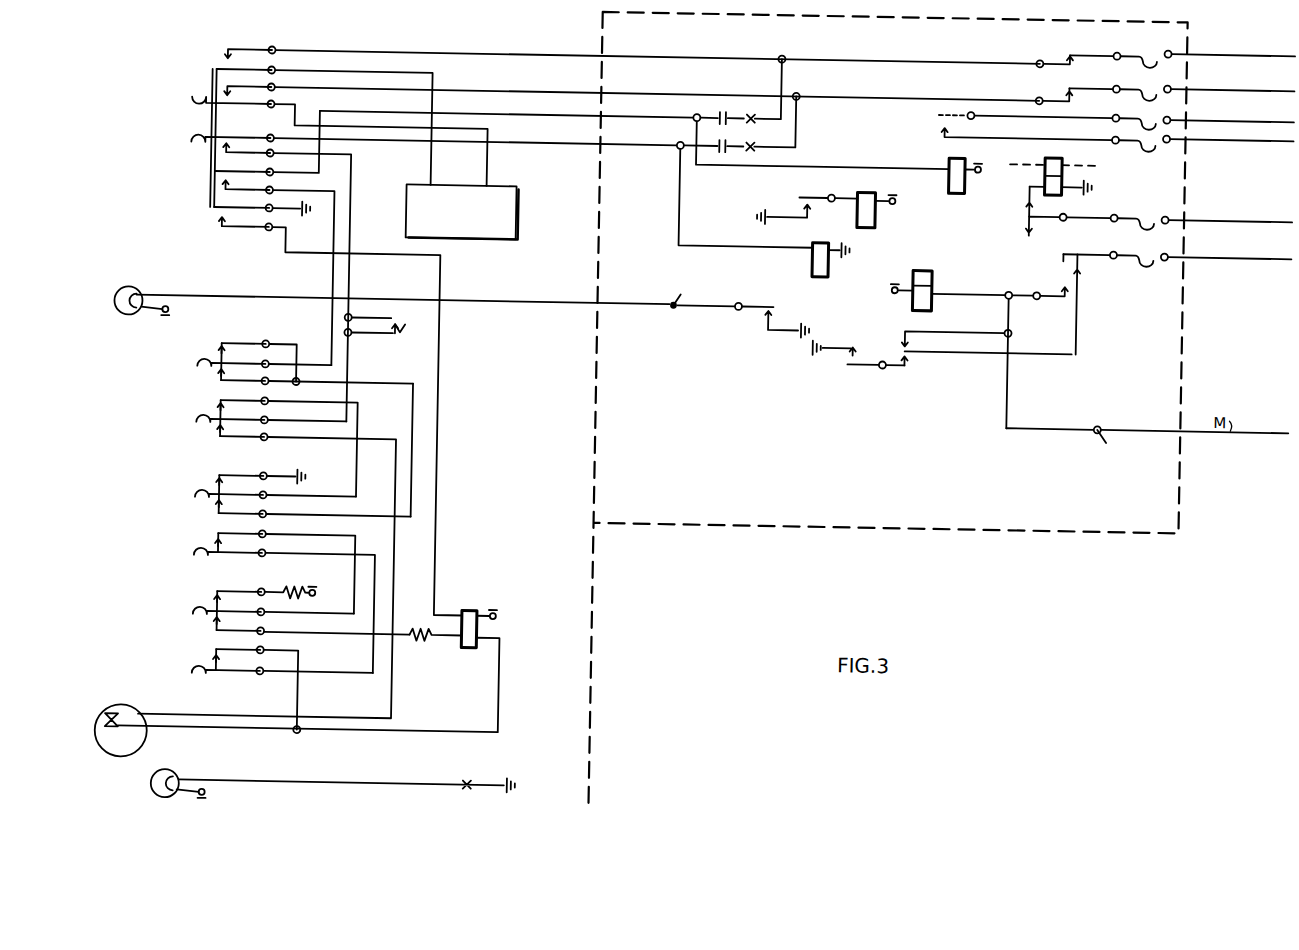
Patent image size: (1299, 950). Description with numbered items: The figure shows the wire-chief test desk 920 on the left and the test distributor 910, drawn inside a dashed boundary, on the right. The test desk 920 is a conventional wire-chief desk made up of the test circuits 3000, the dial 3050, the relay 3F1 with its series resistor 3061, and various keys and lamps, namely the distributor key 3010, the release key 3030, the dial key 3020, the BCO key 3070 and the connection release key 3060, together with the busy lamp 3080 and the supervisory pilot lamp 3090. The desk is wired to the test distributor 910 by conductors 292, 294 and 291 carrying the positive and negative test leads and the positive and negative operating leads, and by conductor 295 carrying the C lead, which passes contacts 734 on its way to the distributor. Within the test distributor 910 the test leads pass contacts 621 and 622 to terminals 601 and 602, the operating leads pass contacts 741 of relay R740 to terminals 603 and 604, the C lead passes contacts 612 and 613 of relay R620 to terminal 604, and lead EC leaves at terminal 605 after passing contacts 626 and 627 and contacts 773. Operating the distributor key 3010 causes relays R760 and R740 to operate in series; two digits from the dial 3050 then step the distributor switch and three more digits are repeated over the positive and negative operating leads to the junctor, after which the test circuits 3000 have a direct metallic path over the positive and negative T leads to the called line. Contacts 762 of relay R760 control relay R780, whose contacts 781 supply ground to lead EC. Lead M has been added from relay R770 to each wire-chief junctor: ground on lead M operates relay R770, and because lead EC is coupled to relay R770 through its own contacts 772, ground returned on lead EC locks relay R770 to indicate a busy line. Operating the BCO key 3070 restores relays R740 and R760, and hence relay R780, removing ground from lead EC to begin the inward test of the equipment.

The distributor key 3010 is at (207, 96).
The test circuits 3000 is at (462, 202).
The busy lamp 3080 is at (72, 309).
The release key 3030 is at (407, 374).
The dial key 3020 is at (214, 387).
The BCO key 3070 is at (202, 523).
The connection release key 3060 is at (202, 648).
The resistor 3061 is at (424, 648).
The relay 3F1 is at (494, 602).
The dial 3050 is at (117, 713).
The supervisory pilot lamp 3090 is at (150, 811).
The test desk 920 is at (520, 486).
The test distributor 910 is at (700, 506).
The conductor 292 is at (591, 132).
The conductor 294 is at (680, 74).
The conductor 291 is at (680, 96).
The conductor 295C 295 is at (651, 296).
The contacts 621 is at (1061, 48).
The contacts 622 is at (1061, 85).
The terminal 601 is at (1137, 34).
The terminal 602 is at (1137, 70).
The terminal 603 is at (1137, 98).
The terminal 604 is at (1136, 130).
The terminal 605 is at (1137, 237).
The contacts 741 is at (938, 115).
The relay R740 is at (955, 146).
The relay R620 is at (1045, 145).
The contacts 612 is at (1026, 200).
The contacts 613 is at (1026, 214).
The contacts 626 is at (1062, 281).
The contacts 627 is at (1090, 251).
The relay R770 is at (934, 268).
The relay R780 is at (852, 184).
The contacts 762 is at (798, 201).
The relay R760 is at (811, 266).
The contacts 734' 734 is at (769, 323).
The contacts 772' 772 is at (895, 342).
The contacts 773' 773 is at (922, 352).
The contacts 781 is at (843, 354).